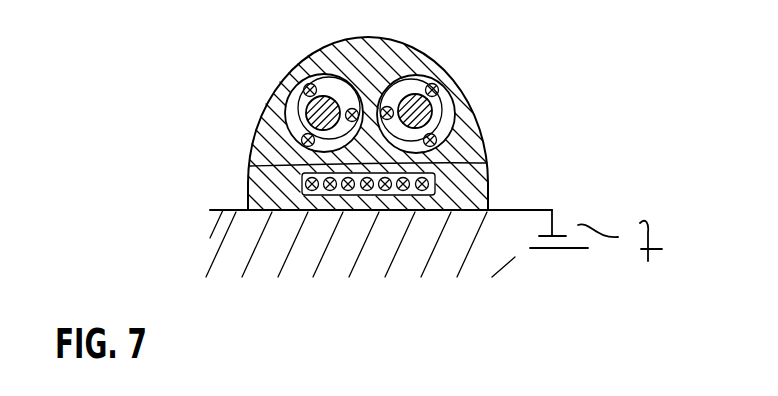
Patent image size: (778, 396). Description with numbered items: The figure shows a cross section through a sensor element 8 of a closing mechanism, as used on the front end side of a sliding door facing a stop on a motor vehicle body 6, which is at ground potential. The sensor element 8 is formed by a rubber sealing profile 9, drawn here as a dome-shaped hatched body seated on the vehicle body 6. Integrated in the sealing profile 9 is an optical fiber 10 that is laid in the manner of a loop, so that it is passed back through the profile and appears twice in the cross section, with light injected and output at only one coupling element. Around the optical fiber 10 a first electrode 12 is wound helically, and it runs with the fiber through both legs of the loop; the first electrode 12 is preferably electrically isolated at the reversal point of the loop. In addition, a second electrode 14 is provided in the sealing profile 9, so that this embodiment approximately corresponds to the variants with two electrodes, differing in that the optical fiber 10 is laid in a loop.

The motor vehicle body 6 is at (337, 267).
The sensor element 8 is at (372, 104).
The rubber sealing profile 9 is at (252, 130).
The optical fiber 10 is at (250, 165).
The first electrode 12 is at (286, 106).
The second electrode 14 is at (487, 163).